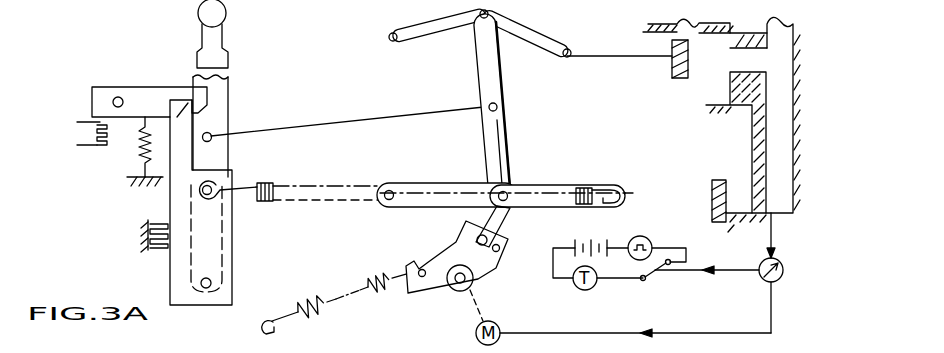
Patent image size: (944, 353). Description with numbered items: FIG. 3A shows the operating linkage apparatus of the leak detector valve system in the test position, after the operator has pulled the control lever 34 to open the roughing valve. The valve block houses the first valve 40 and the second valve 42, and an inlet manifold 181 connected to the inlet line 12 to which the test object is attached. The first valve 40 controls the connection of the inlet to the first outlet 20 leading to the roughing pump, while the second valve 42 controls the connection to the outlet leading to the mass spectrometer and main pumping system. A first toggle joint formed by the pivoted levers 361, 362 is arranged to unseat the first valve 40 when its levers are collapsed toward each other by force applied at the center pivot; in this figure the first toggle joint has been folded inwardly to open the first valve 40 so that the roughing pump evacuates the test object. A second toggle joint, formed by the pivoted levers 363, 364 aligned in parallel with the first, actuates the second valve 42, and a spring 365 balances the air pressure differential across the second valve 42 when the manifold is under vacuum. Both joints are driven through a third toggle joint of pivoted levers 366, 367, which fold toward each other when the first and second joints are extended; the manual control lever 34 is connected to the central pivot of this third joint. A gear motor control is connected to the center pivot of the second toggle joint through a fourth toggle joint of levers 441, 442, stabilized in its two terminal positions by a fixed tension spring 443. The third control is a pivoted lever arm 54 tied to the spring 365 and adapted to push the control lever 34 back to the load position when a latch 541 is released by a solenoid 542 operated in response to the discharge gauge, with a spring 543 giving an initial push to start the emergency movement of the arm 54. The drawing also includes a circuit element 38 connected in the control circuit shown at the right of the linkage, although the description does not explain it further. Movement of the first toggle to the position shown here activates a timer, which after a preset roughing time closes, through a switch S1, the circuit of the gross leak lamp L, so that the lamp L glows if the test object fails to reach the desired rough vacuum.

The inlet line 12 is at (783, 42).
The first outlet 20 is at (662, 22).
The control lever 34 is at (226, 113).
The meter 38 is at (778, 282).
The first valve 40 is at (672, 68).
The second valve 42 is at (705, 178).
The third control lever arm 54 is at (175, 183).
The inlet manifold 181 is at (777, 138).
The pivoted lever of first toggle joint 361 is at (412, 27).
The pivoted lever of first toggle joint 362 is at (521, 28).
The pivoted lever of second toggle joint 363 is at (446, 170).
The pivoted lever of second toggle joint 364 is at (556, 192).
The spring 365 is at (337, 183).
The pivoted lever of third toggle joint 366 is at (513, 102).
The pivoted lever of third toggle joint 367 is at (497, 148).
The lever of fourth toggle joint 441 is at (487, 264).
The lever of fourth toggle joint 442 is at (512, 230).
The fixed tension spring 443 is at (358, 283).
The latch 541 is at (133, 87).
The solenoid 542 is at (93, 145).
The spring 543 is at (165, 252).
The gross leak lamp L is at (635, 242).
The switch S1 is at (648, 282).